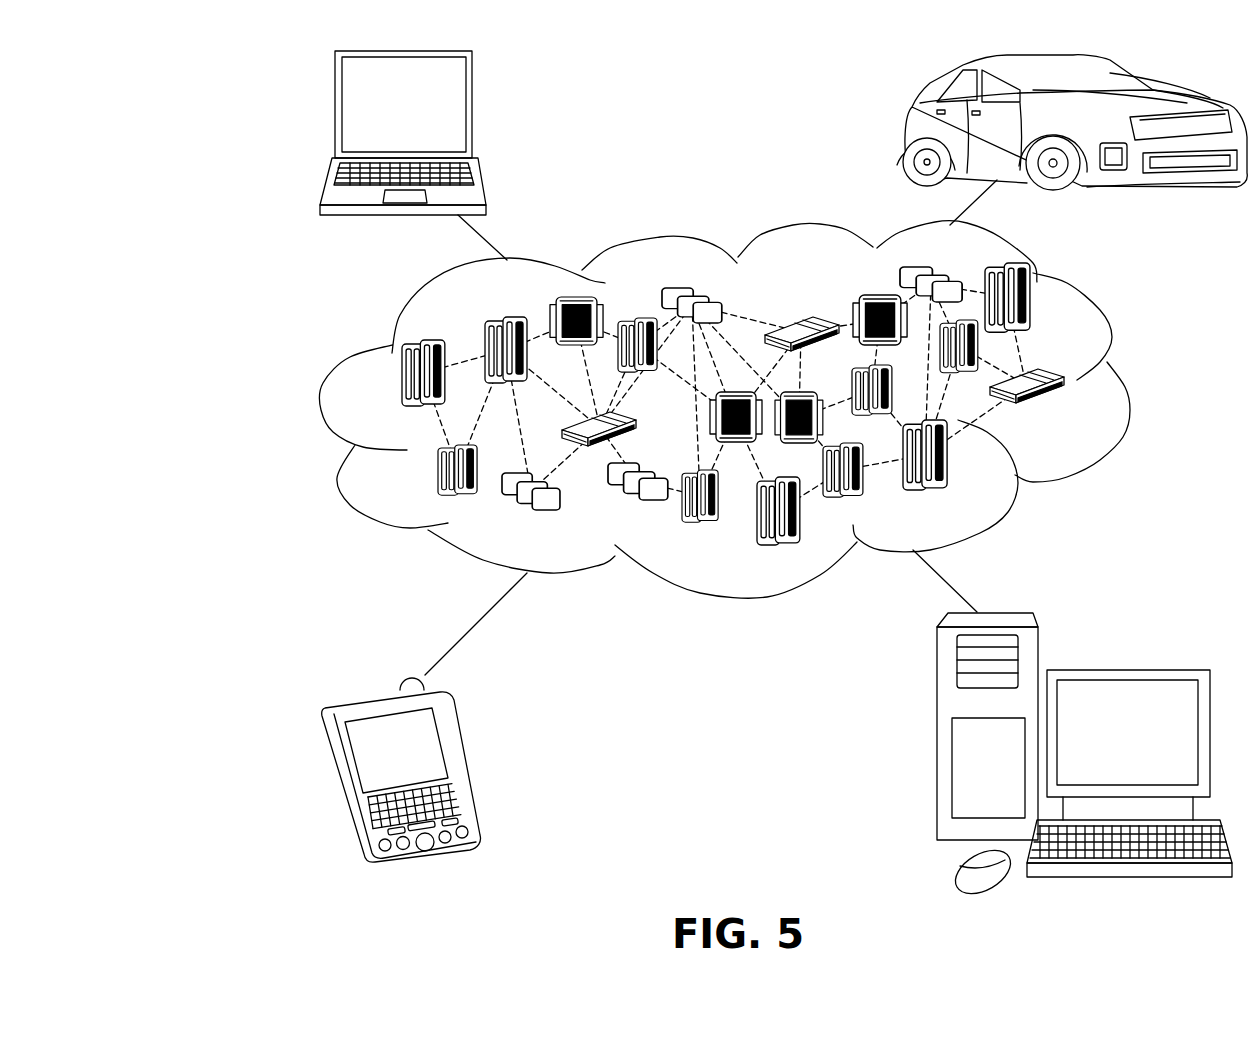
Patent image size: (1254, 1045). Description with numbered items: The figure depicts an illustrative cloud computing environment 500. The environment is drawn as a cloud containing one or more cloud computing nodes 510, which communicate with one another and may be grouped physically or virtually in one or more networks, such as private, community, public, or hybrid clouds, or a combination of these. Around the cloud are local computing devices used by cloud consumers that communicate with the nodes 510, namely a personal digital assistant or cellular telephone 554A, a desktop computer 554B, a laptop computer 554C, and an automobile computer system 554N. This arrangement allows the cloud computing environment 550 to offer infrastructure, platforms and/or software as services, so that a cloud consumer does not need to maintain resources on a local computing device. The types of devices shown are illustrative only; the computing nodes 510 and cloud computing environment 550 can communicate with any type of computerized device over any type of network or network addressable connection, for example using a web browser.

The cloud computing environment 500 is at (166, 73).
The cloud computing nodes 510 is at (1074, 413).
The cloud computing environment 550 is at (1125, 384).
The personal digital assistant (PDA) or cellular telephone 554A is at (462, 763).
The desktop computer 554B is at (1125, 669).
The laptop computer 554C is at (474, 112).
The automobile computer system 554N is at (907, 127).